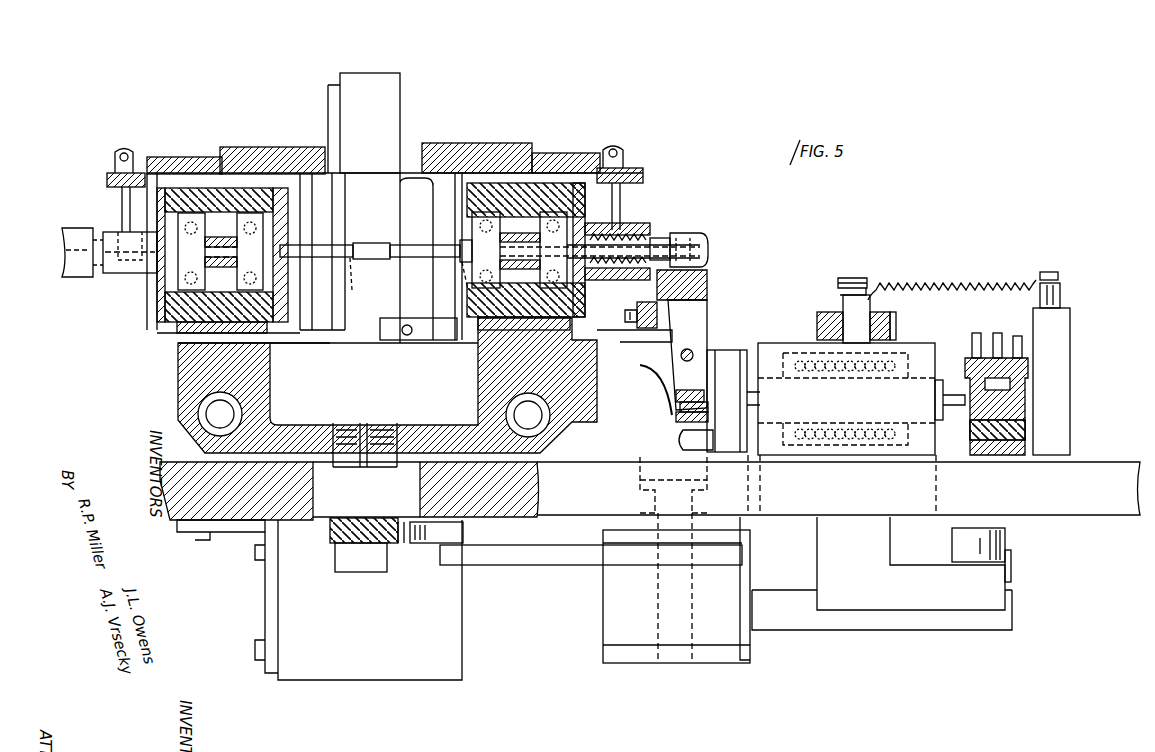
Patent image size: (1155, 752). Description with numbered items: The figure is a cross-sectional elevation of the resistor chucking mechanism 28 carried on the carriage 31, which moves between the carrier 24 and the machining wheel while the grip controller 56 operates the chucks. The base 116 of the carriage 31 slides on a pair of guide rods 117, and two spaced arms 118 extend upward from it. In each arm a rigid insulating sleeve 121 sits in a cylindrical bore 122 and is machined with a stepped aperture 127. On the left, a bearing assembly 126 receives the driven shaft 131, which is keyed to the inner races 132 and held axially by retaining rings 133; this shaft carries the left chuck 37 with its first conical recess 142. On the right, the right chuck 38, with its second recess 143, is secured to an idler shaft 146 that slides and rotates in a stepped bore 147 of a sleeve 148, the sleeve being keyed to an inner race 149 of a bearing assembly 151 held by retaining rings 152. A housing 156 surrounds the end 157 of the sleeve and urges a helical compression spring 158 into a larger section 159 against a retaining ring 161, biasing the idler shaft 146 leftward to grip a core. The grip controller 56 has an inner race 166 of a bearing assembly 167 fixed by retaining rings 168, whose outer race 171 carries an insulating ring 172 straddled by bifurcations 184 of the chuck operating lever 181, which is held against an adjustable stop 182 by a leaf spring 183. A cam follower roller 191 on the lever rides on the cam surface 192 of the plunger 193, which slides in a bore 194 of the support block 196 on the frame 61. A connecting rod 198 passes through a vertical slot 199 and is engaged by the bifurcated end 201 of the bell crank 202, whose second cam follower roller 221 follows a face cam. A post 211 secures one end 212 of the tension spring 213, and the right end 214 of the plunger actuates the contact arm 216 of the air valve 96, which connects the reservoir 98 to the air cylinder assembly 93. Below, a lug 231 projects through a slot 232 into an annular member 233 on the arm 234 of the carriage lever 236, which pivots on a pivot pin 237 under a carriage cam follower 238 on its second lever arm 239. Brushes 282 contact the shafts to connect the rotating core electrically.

The carrier 24 is at (402, 106).
The resistor chucking mechanism 28 is at (146, 309).
The carriage 31 is at (346, 392).
The left chuck 37 is at (306, 244).
The right chuck 38 is at (404, 244).
The grip controller 56 is at (689, 229).
The frame 61 is at (192, 512).
The air cylinder assembly 93 is at (720, 450).
The air valve 96 is at (1034, 383).
The reservoir 98 is at (998, 340).
The base 116 is at (278, 425).
The guide rods 117 is at (206, 413).
The spaced arms 118 is at (180, 358).
The rigid insulating sleeve 121 is at (205, 165).
The cylindrical bore 122 is at (243, 165).
The bearing assembly 126 is at (183, 265).
The stepped aperture 127 is at (157, 205).
The driven shaft 131 is at (62, 235).
The inner races 132 is at (220, 251).
The retaining rings 133 is at (163, 250).
The first conical recess 142 is at (352, 279).
The second recess 143 is at (386, 243).
The idler shaft 146 is at (526, 256).
The stepped bore 147 is at (452, 284).
The sleeve 148 is at (617, 261).
The inner race 149 is at (480, 268).
The bearing assembly 151 is at (472, 178).
The retaining rings 152 is at (470, 218).
The housing 156 is at (632, 230).
The end of sleeve 157 is at (708, 285).
The helical compression spring 158 is at (668, 218).
The larger section 159 is at (624, 311).
The retaining ring 161 is at (523, 320).
The inner race 166 is at (700, 250).
The bearing assembly 167 is at (708, 247).
The retaining rings 168 is at (703, 235).
The outer race 171 is at (705, 240).
The insulating ring 172 is at (705, 218).
The chuck operating lever 181 is at (692, 328).
The adjustable stop 182 is at (660, 326).
The leaf spring 183 is at (672, 390).
The bifurcations 184 is at (670, 230).
The cam follower roller 191 is at (680, 440).
The cam surface 192 is at (700, 368).
The plunger 193 is at (728, 450).
The bore 194 is at (765, 455).
The support block 196 is at (872, 452).
The connecting rod 198 is at (857, 300).
The vertical slot 199 is at (857, 411).
The bifurcated end 201 is at (893, 322).
The bell crank 202 is at (898, 332).
The post 211 is at (1065, 322).
The end of tension spring 212 is at (1044, 272).
The tension spring 213 is at (972, 275).
The right end of plunger 214 is at (863, 485).
The contact arm 216 is at (935, 400).
The second cam follower roller 221 is at (1007, 542).
The lug 231 is at (333, 534).
The slot 232 is at (430, 532).
The annular member 233 is at (346, 566).
The arm 234 is at (508, 560).
The carriage lever 236 is at (607, 596).
The pivot pin 237 is at (657, 596).
The carriage cam follower 238 is at (1013, 572).
The second lever arm 239 is at (805, 622).
The brushes 282 is at (118, 187).